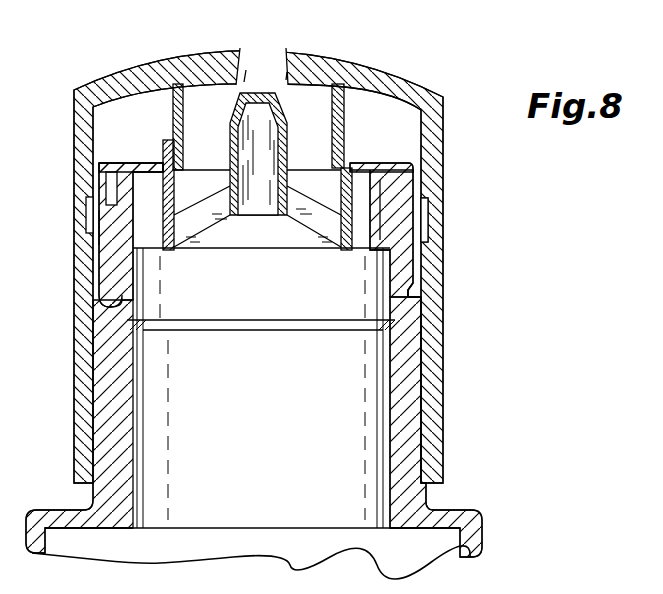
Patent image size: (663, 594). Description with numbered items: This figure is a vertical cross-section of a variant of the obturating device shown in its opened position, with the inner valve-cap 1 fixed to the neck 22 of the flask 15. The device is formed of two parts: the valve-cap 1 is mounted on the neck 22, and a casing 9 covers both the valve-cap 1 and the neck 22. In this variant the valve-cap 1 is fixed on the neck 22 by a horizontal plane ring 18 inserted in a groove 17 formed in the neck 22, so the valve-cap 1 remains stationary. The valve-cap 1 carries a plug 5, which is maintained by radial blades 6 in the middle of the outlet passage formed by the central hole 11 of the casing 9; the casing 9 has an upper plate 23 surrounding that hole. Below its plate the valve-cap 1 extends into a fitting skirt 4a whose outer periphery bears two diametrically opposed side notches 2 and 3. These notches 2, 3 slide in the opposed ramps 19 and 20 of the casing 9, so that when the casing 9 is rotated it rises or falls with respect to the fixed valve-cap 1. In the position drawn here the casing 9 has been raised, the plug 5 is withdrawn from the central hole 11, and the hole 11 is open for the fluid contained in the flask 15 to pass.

The casing 9 is at (131, 76).
The central hole 11 is at (266, 68).
The plug 5 is at (291, 122).
The upper plate 23 is at (386, 76).
The valve-cap 1 is at (128, 160).
The ramp 19 is at (92, 217).
The fitting skirt 4a is at (97, 228).
The side notch 3 is at (97, 265).
The groove 17 is at (90, 323).
The radial blades 6 is at (317, 223).
The ramp 20 is at (426, 222).
The neck 22 is at (400, 228).
The side notch 2 is at (425, 267).
The horizontal plane ring 18 is at (408, 293).
The flask 15 is at (412, 402).